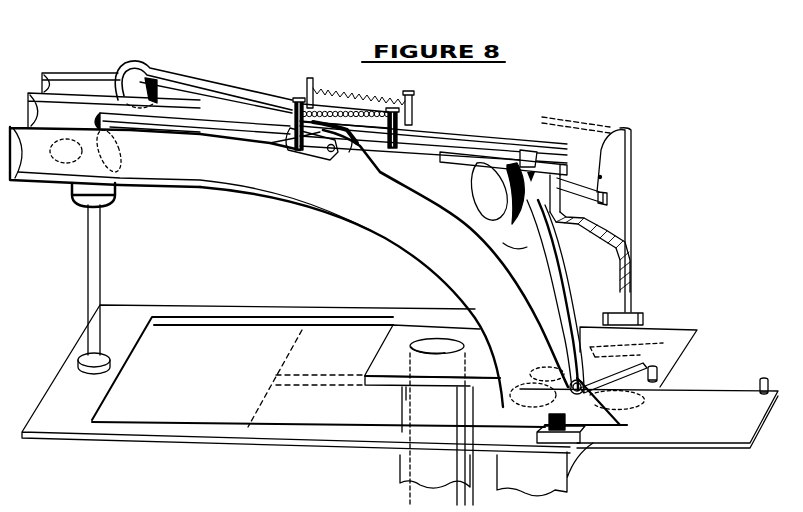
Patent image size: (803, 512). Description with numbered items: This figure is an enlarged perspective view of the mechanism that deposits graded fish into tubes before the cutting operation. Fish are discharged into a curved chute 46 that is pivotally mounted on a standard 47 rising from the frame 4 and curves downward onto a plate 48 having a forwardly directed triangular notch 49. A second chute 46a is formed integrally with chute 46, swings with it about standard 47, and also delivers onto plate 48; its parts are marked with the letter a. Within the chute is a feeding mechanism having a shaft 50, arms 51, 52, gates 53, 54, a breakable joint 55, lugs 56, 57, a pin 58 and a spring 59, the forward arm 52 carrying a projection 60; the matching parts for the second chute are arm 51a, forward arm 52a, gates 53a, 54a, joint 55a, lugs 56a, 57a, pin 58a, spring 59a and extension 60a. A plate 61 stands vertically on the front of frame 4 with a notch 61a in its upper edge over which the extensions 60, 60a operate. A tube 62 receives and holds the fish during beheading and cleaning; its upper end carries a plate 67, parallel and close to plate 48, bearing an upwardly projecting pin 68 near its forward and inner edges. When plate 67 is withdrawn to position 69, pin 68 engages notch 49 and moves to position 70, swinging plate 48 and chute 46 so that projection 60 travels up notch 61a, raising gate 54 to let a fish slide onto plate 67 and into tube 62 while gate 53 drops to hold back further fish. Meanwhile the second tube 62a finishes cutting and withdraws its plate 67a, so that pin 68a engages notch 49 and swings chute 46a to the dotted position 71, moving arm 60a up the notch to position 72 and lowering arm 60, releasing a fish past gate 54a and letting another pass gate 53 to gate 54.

The frame 4 is at (108, 406).
The curved chute 46 is at (270, 197).
The second chute 46a is at (100, 60).
The standard 47 is at (104, 270).
The plate 48 is at (458, 410).
The triangular notch 49 is at (634, 421).
The shaft 50 is at (330, 153).
The arm 51 is at (198, 138).
The arm 51a is at (255, 85).
The forward arm 52 is at (476, 140).
The forward arm 52a is at (447, 140).
The gate 53 is at (96, 146).
The gate 53a is at (118, 70).
The gate 54 is at (470, 211).
The gate 54a is at (512, 187).
The breakable joint 55 is at (312, 150).
The breakable joint 55a is at (357, 103).
The lug 56 is at (290, 144).
The lug 56a is at (320, 88).
The lug 57 is at (380, 143).
The lug 57a is at (413, 104).
The pin 58 is at (295, 104).
The pin 58a is at (309, 80).
The spring 59 is at (307, 98).
The spring 59a is at (407, 98).
The projection 60 is at (543, 146).
The extension 60a is at (575, 180).
The plate 61 is at (628, 223).
The notch 61a is at (602, 177).
The tube 62 is at (562, 492).
The tube 62a is at (403, 410).
The plate 67 is at (712, 441).
The plate 67a is at (676, 329).
The pin 68 is at (760, 384).
The pin 68a is at (660, 372).
The withdrawn position 69 is at (266, 404).
The pin position 70 is at (632, 387).
The dotted-line chute position 71 is at (662, 350).
The arm position 72 is at (592, 126).